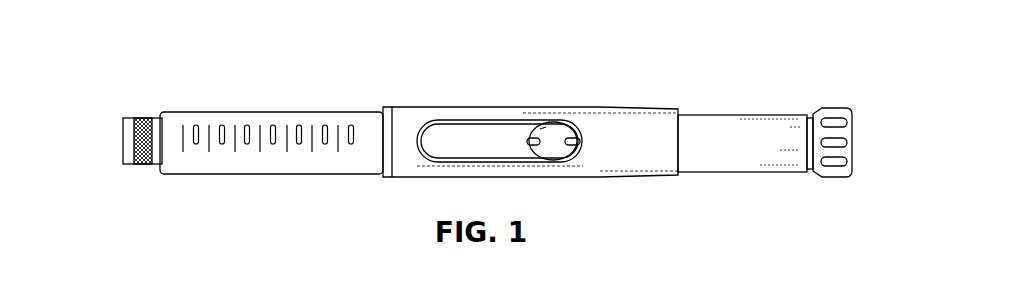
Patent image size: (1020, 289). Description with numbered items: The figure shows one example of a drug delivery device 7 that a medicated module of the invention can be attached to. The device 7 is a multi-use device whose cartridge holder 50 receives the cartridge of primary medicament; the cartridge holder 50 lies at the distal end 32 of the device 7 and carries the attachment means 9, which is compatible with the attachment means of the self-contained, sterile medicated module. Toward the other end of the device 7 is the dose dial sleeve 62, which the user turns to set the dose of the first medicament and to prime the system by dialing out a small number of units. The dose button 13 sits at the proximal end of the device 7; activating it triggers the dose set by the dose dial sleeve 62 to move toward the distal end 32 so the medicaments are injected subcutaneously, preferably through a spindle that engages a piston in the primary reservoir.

The distal end 32 is at (50, 146).
The attachment means 9 is at (140, 114).
The cartridge holder 50 is at (255, 175).
The drug delivery device 7 is at (495, 106).
The dose dial sleeve 62 is at (743, 114).
The dose button 13 is at (828, 108).